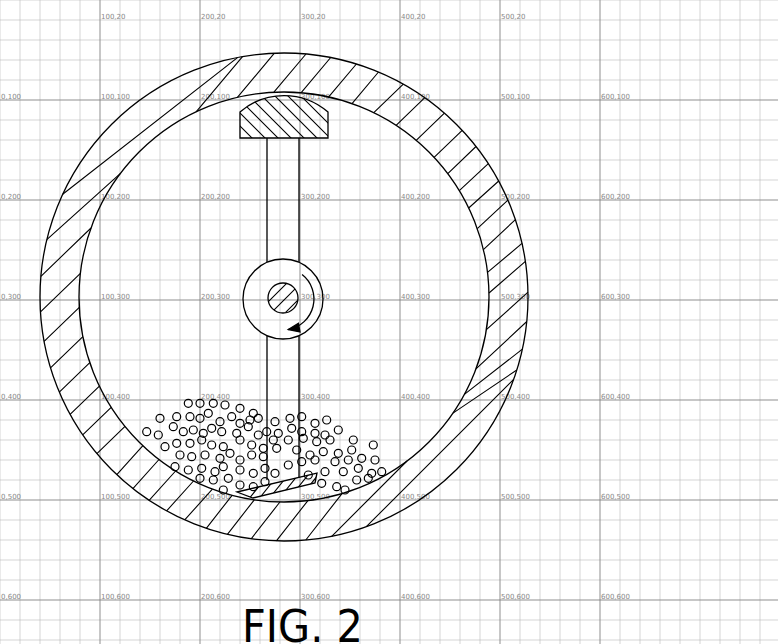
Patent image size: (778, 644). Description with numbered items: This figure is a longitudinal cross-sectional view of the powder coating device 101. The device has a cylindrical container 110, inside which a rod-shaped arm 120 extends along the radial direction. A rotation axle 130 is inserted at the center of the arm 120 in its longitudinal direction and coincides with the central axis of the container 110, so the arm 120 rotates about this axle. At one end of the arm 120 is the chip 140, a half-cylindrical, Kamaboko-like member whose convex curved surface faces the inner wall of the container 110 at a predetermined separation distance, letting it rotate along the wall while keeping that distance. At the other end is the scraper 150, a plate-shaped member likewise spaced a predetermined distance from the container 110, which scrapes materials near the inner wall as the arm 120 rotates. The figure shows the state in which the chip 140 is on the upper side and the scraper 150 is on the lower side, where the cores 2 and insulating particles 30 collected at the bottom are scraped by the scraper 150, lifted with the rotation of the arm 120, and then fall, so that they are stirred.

The powder coating device 101 is at (305, 294).
The container 110 is at (495, 198).
The arm 120 is at (287, 191).
The rotation axle 130 is at (280, 297).
The chip 140 is at (240, 122).
The scraper 150 is at (300, 482).
The core 2 is at (244, 479).
The insulating particle 30 is at (168, 474).